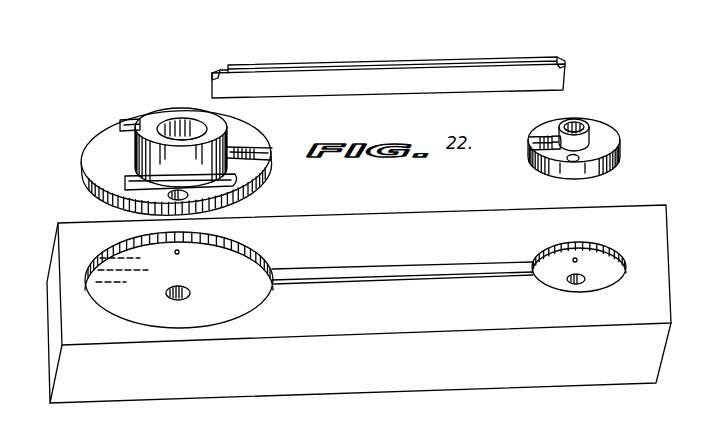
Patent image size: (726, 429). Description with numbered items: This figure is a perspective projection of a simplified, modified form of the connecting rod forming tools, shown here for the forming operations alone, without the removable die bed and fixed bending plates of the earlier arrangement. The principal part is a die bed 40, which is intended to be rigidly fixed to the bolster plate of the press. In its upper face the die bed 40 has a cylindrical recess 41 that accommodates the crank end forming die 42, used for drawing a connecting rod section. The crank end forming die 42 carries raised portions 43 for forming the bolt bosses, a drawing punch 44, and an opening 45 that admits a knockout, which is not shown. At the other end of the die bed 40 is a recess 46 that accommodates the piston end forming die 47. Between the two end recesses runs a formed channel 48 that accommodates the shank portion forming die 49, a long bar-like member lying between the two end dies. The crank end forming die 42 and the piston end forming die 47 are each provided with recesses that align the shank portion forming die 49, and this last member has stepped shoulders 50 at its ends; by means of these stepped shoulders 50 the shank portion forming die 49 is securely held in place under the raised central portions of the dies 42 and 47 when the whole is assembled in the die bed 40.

The die bed 40 is at (359, 304).
The cylindrical recess 41 is at (179, 280).
The crank end forming die 42 is at (184, 148).
The raised portions 43 is at (130, 119).
The drawing punch 44 is at (222, 133).
The opening 45 is at (181, 128).
The recess 46 is at (600, 278).
The piston end forming die 47 is at (605, 140).
The formed channel 48 is at (397, 269).
The shank portion forming die 49 is at (398, 70).
The stepped shoulders 50 is at (221, 73).